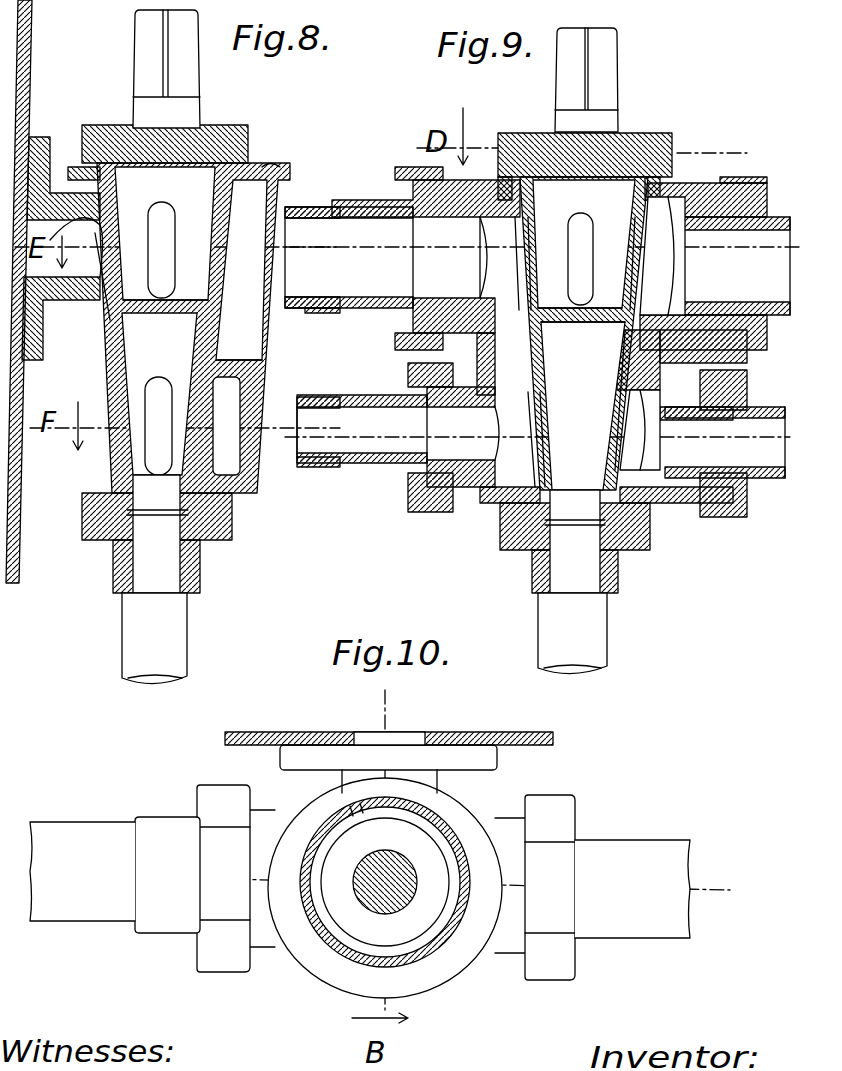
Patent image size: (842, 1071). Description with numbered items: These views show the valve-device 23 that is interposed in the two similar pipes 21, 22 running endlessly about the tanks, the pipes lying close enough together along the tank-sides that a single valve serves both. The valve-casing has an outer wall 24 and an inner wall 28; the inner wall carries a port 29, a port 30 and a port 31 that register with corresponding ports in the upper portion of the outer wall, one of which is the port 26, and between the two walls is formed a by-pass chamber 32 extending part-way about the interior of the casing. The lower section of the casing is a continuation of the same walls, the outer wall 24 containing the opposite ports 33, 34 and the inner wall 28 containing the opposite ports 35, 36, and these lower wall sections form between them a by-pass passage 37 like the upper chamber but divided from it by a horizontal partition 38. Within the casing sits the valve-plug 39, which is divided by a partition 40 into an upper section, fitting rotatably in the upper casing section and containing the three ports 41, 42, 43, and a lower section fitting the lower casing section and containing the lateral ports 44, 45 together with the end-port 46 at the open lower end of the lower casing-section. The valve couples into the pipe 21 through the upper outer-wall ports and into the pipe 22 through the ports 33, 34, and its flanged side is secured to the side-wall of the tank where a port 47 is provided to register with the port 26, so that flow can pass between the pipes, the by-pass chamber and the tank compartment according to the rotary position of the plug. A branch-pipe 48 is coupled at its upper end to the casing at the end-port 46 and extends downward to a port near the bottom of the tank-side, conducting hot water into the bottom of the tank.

In FIG. 8, the pipe 21 is at (312, 257).
In FIG. 9, the pipe 21 is at (537, 261).
In FIG. 10, the pipe 21 is at (77, 818).
In FIG. 8, the pipe 22 is at (318, 432).
In FIG. 9, the pipe 22 is at (541, 436).
In FIG. 8, the valve-device 23 is at (186, 339).
In FIG. 9, the valve-device 23 is at (549, 339).
In FIG. 10, the valve-device 23 is at (297, 958).
In FIG. 8, the outer wall 24 is at (278, 213).
In FIG. 9, the outer wall 24 is at (477, 353).
In FIG. 8, the port 26 is at (92, 289).
In FIG. 8, the inner wall 28 is at (225, 213).
In FIG. 9, the inner wall 28 is at (520, 312).
In FIG. 9, the port 29 is at (638, 267).
In FIG. 8, the port 30 is at (98, 231).
In FIG. 9, the port 30 is at (586, 80).
In FIG. 9, the port 31 is at (520, 233).
In FIG. 8, the by-pass chamber 32 is at (238, 320).
In FIG. 9, the by-pass chamber 32 is at (650, 357).
In FIG. 9, the port 33 is at (660, 503).
In FIG. 9, the port 34 is at (440, 453).
In FIG. 9, the port 35 is at (618, 440).
In FIG. 9, the port 36 is at (497, 440).
In FIG. 8, the by-pass passage 37 is at (232, 470).
In FIG. 9, the by-pass passage 37 is at (518, 473).
In FIG. 8, the horizontal partition 38 is at (247, 372).
In FIG. 9, the horizontal partition 38 is at (507, 373).
In FIG. 8, the valve-plug 39 is at (155, 321).
In FIG. 9, the valve-plug 39 is at (537, 165).
In FIG. 10, the valve-plug 39 is at (430, 863).
In FIG. 8, the partition 40 is at (143, 307).
In FIG. 9, the partition 40 is at (581, 333).
In FIG. 8, the port 41 is at (163, 267).
In FIG. 9, the port 41 is at (636, 250).
In FIG. 8, the port 42 is at (113, 243).
In FIG. 9, the port 42 is at (580, 230).
In FIG. 9, the port 43 is at (533, 273).
In FIG. 8, the lateral port 44 is at (160, 410).
In FIG. 9, the lateral port 44 is at (618, 430).
In FIG. 9, the lateral port 45 is at (540, 423).
In FIG. 8, the end-port 46 is at (153, 506).
In FIG. 9, the end-port 46 is at (575, 513).
In FIG. 8, the port 47 is at (22, 236).
In FIG. 10, the port 47 is at (407, 743).
In FIG. 8, the branch-pipe 48 is at (160, 585).
In FIG. 9, the branch-pipe 48 is at (572, 633).